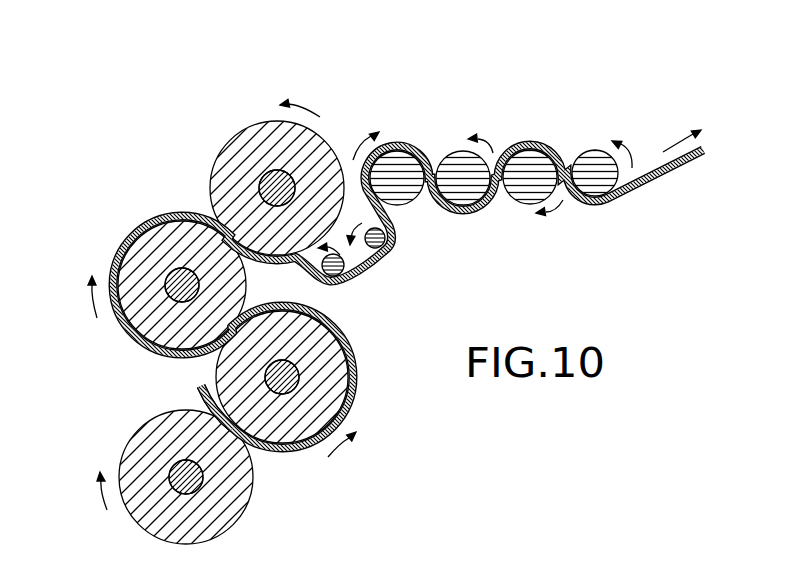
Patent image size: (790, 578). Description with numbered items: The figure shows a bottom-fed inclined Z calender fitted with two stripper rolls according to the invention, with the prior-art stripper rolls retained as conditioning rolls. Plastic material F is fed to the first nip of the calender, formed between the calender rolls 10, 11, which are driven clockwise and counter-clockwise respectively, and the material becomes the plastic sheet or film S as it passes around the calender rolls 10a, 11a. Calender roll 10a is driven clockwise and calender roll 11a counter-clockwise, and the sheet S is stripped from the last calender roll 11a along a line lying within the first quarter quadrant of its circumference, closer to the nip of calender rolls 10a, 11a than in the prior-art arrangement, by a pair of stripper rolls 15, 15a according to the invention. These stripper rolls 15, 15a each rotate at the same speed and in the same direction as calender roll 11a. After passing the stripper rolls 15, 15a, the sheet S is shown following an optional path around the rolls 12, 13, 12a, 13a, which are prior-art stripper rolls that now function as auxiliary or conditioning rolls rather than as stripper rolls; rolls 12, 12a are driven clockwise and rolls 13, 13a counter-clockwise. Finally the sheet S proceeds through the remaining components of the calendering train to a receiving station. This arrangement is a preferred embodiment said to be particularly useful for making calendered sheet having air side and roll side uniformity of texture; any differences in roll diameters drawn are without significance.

The calender roll 10 is at (232, 497).
The calender roll 11 is at (332, 381).
The calender roll 10a is at (177, 232).
The calender roll 11a is at (263, 135).
The stripper roll 12 is at (397, 170).
The stripper roll 13 is at (461, 165).
The stripper roll 12a is at (528, 193).
The stripper roll 13a is at (595, 167).
The stripper roll 15 is at (345, 275).
The stripper roll 15a is at (388, 246).
The plastic material F is at (197, 395).
The plastic sheet S is at (658, 183).